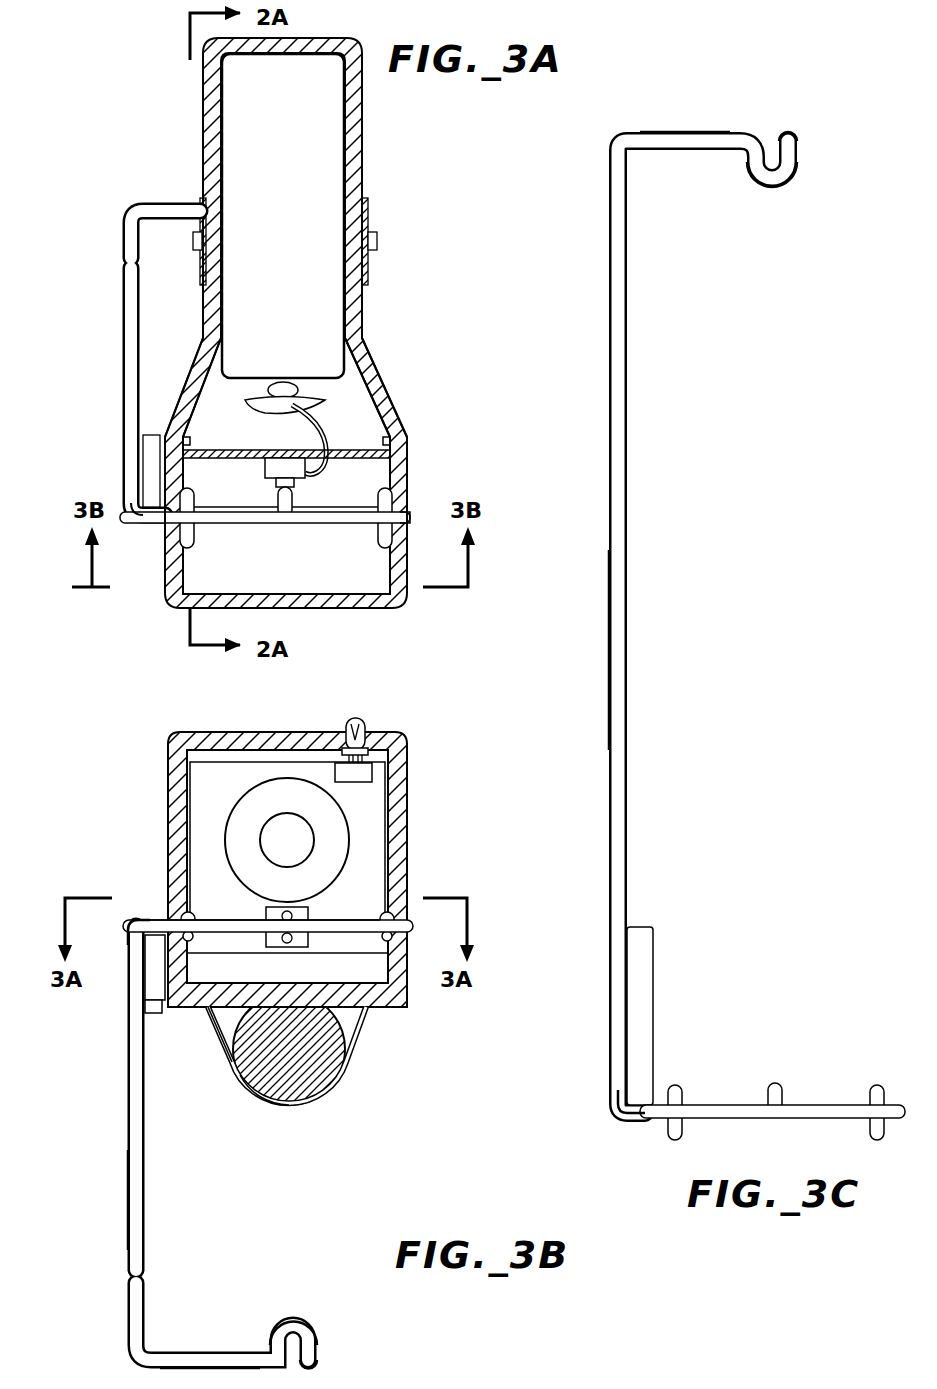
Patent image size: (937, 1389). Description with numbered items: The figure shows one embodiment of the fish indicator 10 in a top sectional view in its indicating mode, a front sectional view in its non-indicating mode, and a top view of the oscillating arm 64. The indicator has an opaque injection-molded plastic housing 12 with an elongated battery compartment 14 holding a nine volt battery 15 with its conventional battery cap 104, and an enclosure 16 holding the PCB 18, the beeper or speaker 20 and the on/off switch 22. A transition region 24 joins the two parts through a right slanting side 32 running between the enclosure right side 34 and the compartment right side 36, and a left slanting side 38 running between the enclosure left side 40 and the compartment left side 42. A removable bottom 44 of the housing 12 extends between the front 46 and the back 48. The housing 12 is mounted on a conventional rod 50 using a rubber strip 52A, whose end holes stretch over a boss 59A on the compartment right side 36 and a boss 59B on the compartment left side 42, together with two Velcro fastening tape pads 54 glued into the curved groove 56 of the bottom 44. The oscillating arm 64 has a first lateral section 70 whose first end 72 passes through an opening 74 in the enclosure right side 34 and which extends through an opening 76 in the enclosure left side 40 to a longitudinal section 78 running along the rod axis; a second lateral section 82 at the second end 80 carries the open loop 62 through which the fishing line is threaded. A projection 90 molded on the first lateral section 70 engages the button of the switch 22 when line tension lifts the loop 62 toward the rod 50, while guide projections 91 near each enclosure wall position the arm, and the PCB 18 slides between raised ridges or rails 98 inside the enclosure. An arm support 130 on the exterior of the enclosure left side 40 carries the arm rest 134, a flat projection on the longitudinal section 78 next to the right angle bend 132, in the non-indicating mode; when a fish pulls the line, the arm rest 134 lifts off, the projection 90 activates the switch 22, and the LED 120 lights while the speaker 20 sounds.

In FIG. 3A, the fish indicator 10 is at (80, 38).
In FIG. 3B, the fish indicator 10 is at (78, 752).
In FIG. 3A, the housing 12 is at (150, 124).
In FIG. 3B, the housing 12 is at (158, 838).
In FIG. 3A, the battery compartment 14 is at (204, 96).
In FIG. 3A, the battery 15 is at (296, 168).
In FIG. 3A, the enclosure 16 is at (190, 596).
In FIG. 3A, the PCB 18 is at (395, 456).
In FIG. 3B, the PCB 18 is at (372, 786).
In FIG. 3B, the beeper or speaker 20 is at (325, 855).
In FIG. 3A, the on/off switch 22 is at (268, 470).
In FIG. 3B, the on/off switch 22 is at (300, 912).
In FIG. 3A, the transition region 24 is at (355, 395).
In FIG. 3A, the right slanting side 32 is at (365, 360).
In FIG. 3A, the enclosure right side 34 is at (407, 597).
In FIG. 3B, the enclosure right side 34 is at (398, 800).
In FIG. 3A, the compartment right side 36 is at (365, 112).
In FIG. 3A, the left slanting side 38 is at (200, 380).
In FIG. 3A, the enclosure left side 40 is at (170, 565).
In FIG. 3B, the enclosure left side 40 is at (172, 790).
In FIG. 3A, the compartment left side 42 is at (203, 168).
In FIG. 3B, the removable bottom 44 is at (385, 1002).
In FIG. 3A, the front 46 is at (300, 42).
In FIG. 3A, the back 48 is at (340, 605).
In FIG. 3B, the rod 50 is at (300, 1088).
In FIG. 3A, the rubber strip 52A is at (369, 262).
In FIG. 3B, the rubber strip 52A is at (252, 1100).
In FIG. 3B, the Velcro fastening tape pads 54 is at (352, 1035).
In FIG. 3B, the curved groove 56 is at (215, 1035).
In FIG. 3A, the boss 59A is at (378, 242).
In FIG. 3A, the boss 59B is at (193, 241).
In FIG. 3B, the loop 62 is at (300, 1326).
In FIG. 3C, the loop 62 is at (775, 188).
In FIG. 3A, the oscillating arm 64 is at (118, 340).
In FIG. 3B, the oscillating arm 64 is at (122, 1107).
In FIG. 3C, the oscillating arm 64 is at (665, 450).
In FIG. 3B, the first lateral section 70 is at (370, 912).
In FIG. 3C, the first lateral section 70 is at (800, 1103).
In FIG. 3A, the first end 72 is at (410, 514).
In FIG. 3B, the first end 72 is at (412, 926).
In FIG. 3A, the opening 74 is at (410, 543).
In FIG. 3A, the opening 76 is at (162, 522).
In FIG. 3B, the longitudinal section 78 is at (130, 1180).
In FIG. 3C, the longitudinal section 78 is at (628, 640).
In FIG. 3B, the second end 80 is at (320, 1360).
In FIG. 3C, the second end 80 is at (797, 140).
In FIG. 3B, the second lateral section 82 is at (220, 1352).
In FIG. 3C, the second lateral section 82 is at (700, 132).
In FIG. 3A, the projection 90 is at (292, 502).
In FIG. 3C, the projection 90 is at (778, 1083).
In FIG. 3A, the guide projections 91 is at (395, 492).
In FIG. 3B, the guide projections 91 is at (183, 912).
In FIG. 3C, the guide projections 91 is at (678, 1085).
In FIG. 3A, the raised ridges or rails 98 is at (400, 440).
In FIG. 3A, the battery cap 104 is at (243, 400).
In FIG. 3B, the LED 120 is at (362, 722).
In FIG. 3B, the arm support 130 is at (146, 1001).
In FIG. 3B, the right angle bend 132 is at (126, 915).
In FIG. 3C, the right angle bend 132 is at (608, 1120).
In FIG. 3A, the arm rest 134 is at (153, 470).
In FIG. 3B, the arm rest 134 is at (150, 962).
In FIG. 3C, the arm rest 134 is at (653, 968).